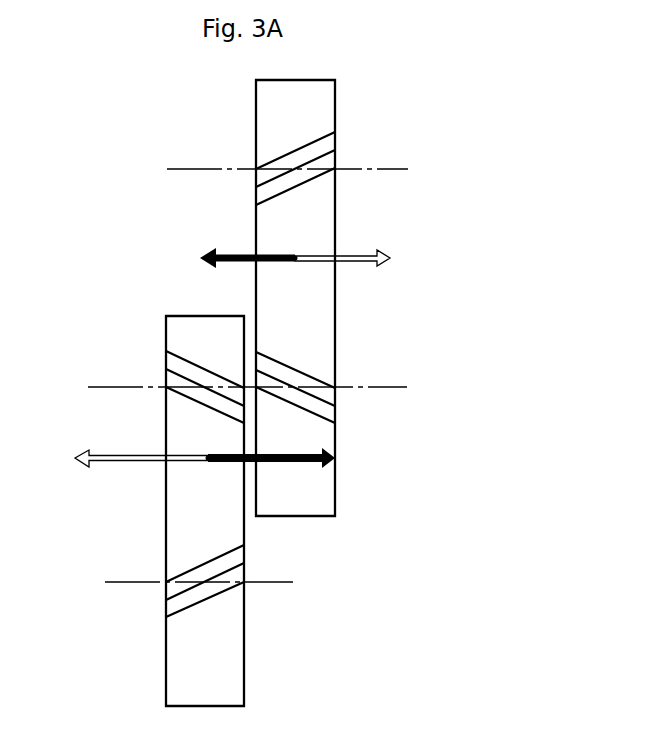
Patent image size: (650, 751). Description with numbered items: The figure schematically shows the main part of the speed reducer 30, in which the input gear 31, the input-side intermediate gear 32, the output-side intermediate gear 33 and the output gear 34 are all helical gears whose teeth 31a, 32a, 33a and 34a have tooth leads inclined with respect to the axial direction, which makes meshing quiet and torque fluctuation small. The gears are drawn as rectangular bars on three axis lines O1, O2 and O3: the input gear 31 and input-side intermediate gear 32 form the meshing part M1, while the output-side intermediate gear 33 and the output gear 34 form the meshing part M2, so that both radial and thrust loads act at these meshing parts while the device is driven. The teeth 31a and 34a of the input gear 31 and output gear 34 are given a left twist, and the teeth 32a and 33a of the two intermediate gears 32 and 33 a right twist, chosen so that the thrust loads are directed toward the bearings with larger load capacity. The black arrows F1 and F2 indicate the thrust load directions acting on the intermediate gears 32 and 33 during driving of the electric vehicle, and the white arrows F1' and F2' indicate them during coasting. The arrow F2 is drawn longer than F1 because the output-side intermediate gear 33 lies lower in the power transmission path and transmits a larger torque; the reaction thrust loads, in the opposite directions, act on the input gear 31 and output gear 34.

The speed reducer 30 is at (453, 130).
The input gear 31 is at (273, 114).
The teeth of the input gear 31a is at (317, 140).
The input-side intermediate gear 32 is at (320, 311).
The teeth of the input-side intermediate gear 32a is at (307, 375).
The output-side intermediate gear 33 is at (180, 333).
The teeth of the output-side intermediate gear 33a is at (187, 378).
The output gear 34 is at (185, 542).
The teeth of the output gear 34a is at (220, 593).
The first axis line O1 is at (187, 169).
The second axis line O2 is at (104, 387).
The third axis line O3 is at (126, 582).
The black arrow F1 is at (221, 249).
The white arrow F1' is at (373, 249).
The black arrow F2 is at (299, 466).
The white arrow F2' is at (113, 466).
The meshing part M1 is at (296, 251).
The meshing part M2 is at (206, 454).